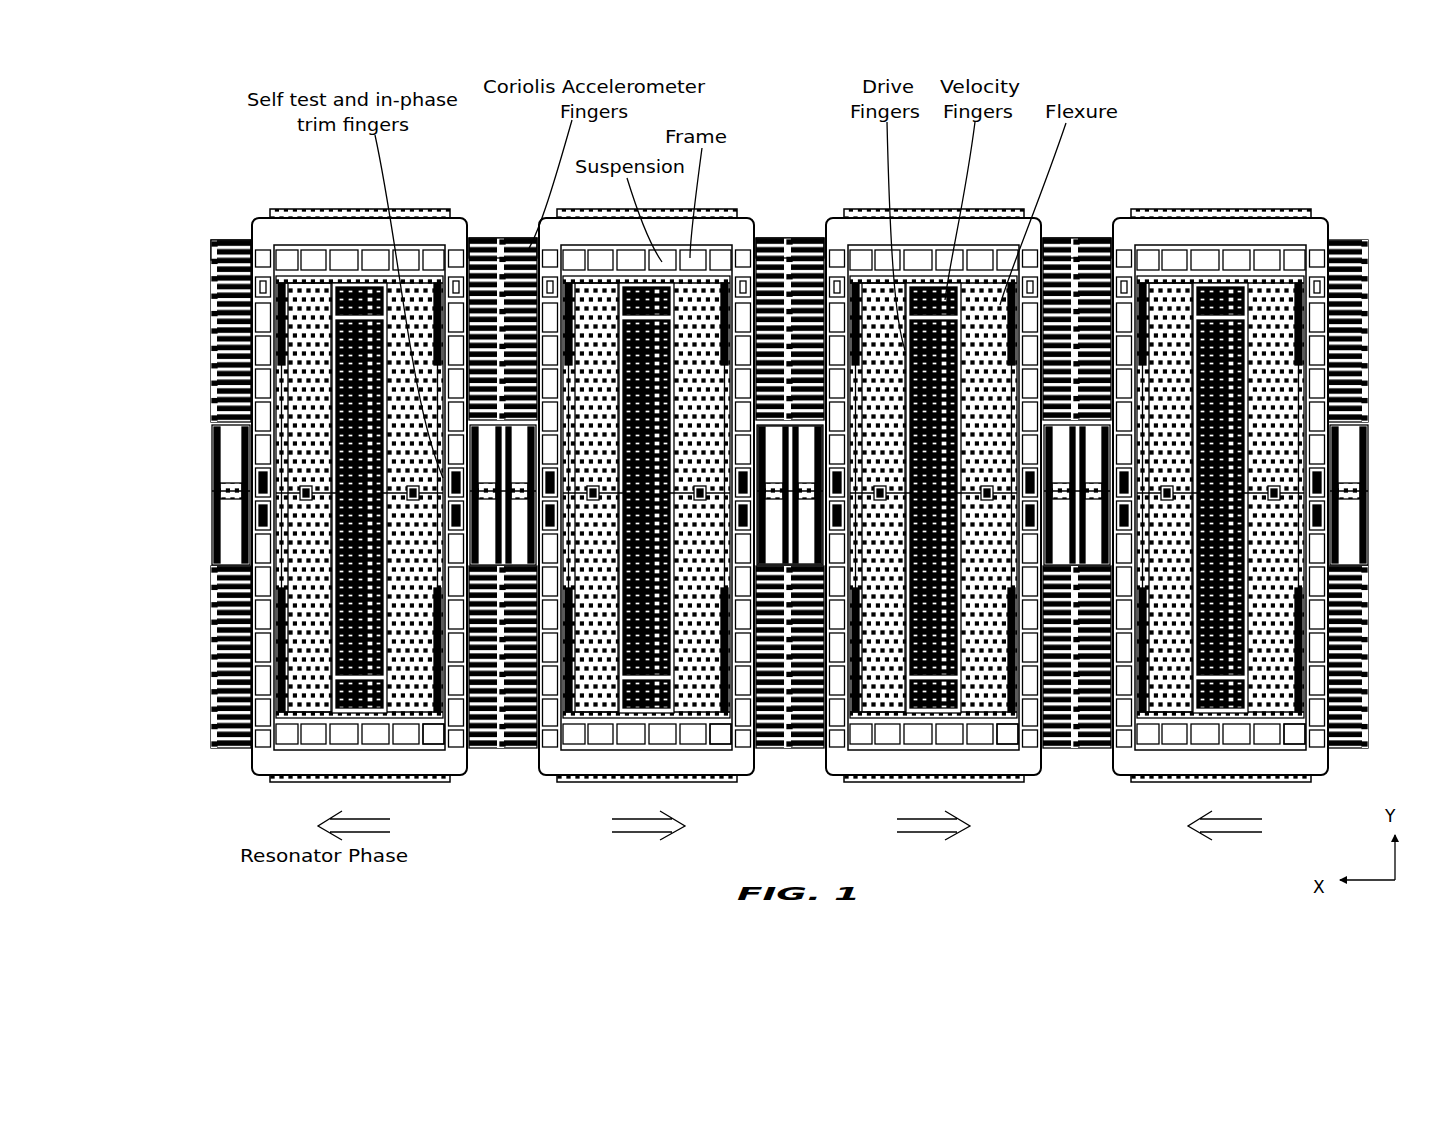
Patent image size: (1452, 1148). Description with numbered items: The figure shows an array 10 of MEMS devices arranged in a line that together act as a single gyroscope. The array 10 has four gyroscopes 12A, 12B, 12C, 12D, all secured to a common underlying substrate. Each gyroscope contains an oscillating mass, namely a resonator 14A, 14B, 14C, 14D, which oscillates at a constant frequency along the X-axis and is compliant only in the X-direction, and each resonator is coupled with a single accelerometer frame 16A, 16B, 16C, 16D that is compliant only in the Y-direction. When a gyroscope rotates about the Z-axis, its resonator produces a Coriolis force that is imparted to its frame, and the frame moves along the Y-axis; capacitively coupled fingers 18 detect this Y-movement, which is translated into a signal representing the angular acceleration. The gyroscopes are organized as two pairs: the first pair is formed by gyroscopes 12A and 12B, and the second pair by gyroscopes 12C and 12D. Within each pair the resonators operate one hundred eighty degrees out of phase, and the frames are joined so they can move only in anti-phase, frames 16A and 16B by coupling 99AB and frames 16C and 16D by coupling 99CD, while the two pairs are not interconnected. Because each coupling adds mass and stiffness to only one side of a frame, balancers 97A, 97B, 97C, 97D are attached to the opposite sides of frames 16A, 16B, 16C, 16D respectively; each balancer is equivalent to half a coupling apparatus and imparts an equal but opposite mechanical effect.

The array 10 is at (1270, 178).
The first gyroscope 12A is at (414, 814).
The second gyroscope 12B is at (691, 800).
The third gyroscope 12C is at (978, 800).
The fourth gyroscope 12D is at (1265, 800).
The resonator 14A is at (310, 650).
The resonator 14B is at (597, 650).
The resonator 14C is at (884, 650).
The resonator 14D is at (1171, 650).
The frame 16A is at (433, 735).
The frame 16B is at (720, 735).
The frame 16C is at (1007, 735).
The frame 16D is at (1294, 735).
The capacitively coupled fingers 18 is at (236, 233).
The balancer 97A is at (212, 445).
The balancer 97B is at (783, 470).
The balancer 97C is at (790, 495).
The balancer 97D is at (1355, 500).
The coupling 99AB is at (493, 452).
The coupling 99CD is at (1072, 452).